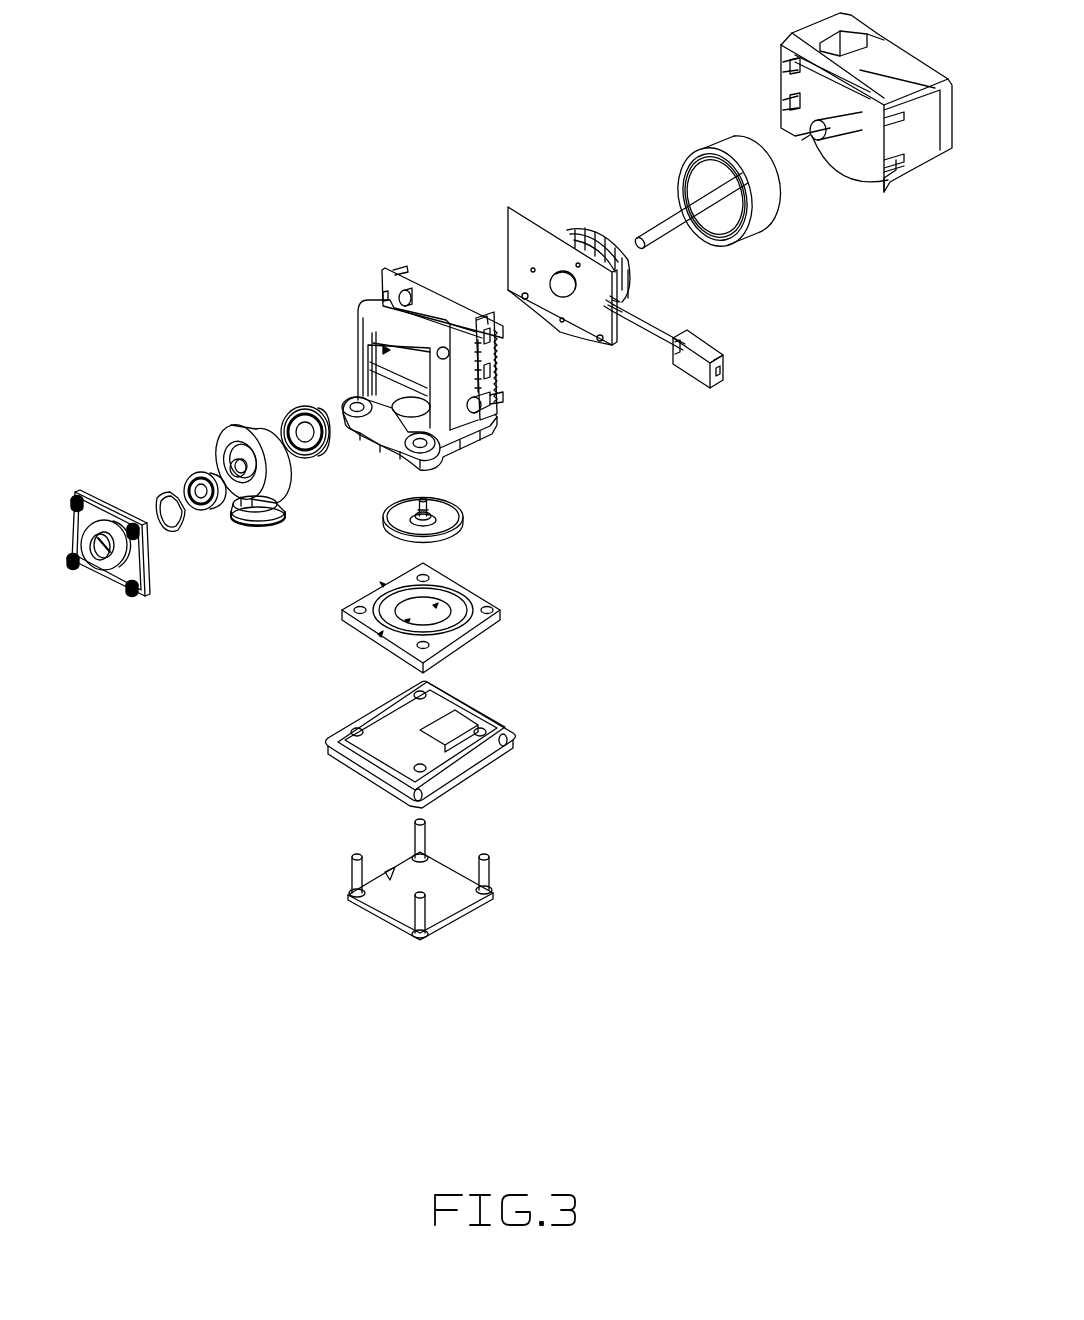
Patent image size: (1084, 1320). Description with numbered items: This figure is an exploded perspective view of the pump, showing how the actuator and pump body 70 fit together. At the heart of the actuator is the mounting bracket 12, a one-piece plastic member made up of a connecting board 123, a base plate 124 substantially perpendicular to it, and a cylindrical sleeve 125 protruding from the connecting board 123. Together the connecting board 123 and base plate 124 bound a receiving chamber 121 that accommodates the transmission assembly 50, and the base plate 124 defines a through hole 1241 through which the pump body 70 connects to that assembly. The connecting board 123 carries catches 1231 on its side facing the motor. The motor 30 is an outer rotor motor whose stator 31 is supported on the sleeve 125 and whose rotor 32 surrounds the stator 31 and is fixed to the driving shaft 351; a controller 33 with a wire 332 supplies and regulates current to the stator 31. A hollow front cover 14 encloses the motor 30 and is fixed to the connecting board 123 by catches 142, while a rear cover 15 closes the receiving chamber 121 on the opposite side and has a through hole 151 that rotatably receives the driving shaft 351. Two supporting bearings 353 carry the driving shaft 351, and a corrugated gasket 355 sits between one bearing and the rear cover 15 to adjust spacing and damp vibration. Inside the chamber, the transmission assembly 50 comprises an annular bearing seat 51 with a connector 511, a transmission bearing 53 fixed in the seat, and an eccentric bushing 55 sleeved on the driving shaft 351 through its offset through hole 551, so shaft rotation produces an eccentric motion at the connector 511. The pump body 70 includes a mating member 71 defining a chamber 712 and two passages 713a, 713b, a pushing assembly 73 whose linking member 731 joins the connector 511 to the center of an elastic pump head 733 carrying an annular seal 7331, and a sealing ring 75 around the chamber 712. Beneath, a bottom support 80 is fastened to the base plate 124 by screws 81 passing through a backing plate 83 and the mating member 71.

The mounting bracket 12 is at (407, 327).
The receiving chamber 121 is at (370, 360).
The connecting board 123 is at (385, 275).
The base plate 124 is at (407, 401).
The through hole 1241 is at (410, 412).
The catches 1231 is at (503, 398).
The sleeve 125 is at (487, 315).
The front cover 14 is at (786, 76).
The catches 142 is at (782, 108).
The rear cover 15 is at (96, 567).
The through hole 151 is at (100, 552).
The motor 30 is at (693, 298).
The stator 31 is at (632, 282).
The rotor 32 is at (766, 220).
The controller 33 is at (668, 377).
The wire 332 is at (710, 366).
The driving shaft 351 is at (680, 222).
The supporting bearings 353 is at (303, 414).
The gasket 355 is at (175, 532).
The transmission assembly 50 is at (212, 461).
The bearing seat 51 is at (262, 440).
The connector 511 is at (275, 520).
The transmission bearing 53 is at (243, 502).
The eccentric bushing 55 is at (236, 450).
The through hole 551 is at (232, 463).
The pump body 70 is at (442, 593).
The mating member 71 is at (420, 642).
The chamber 712 is at (410, 607).
The passage 713a is at (380, 636).
The passage 713b is at (437, 605).
The pushing assembly 73 is at (446, 520).
The linking member 731 is at (430, 503).
The pump head 733 is at (447, 523).
The annular seal 7331 is at (385, 523).
The sealing ring 75 is at (470, 596).
The bottom support 80 is at (482, 752).
The screws 81 is at (487, 877).
The backing plate 83 is at (456, 879).